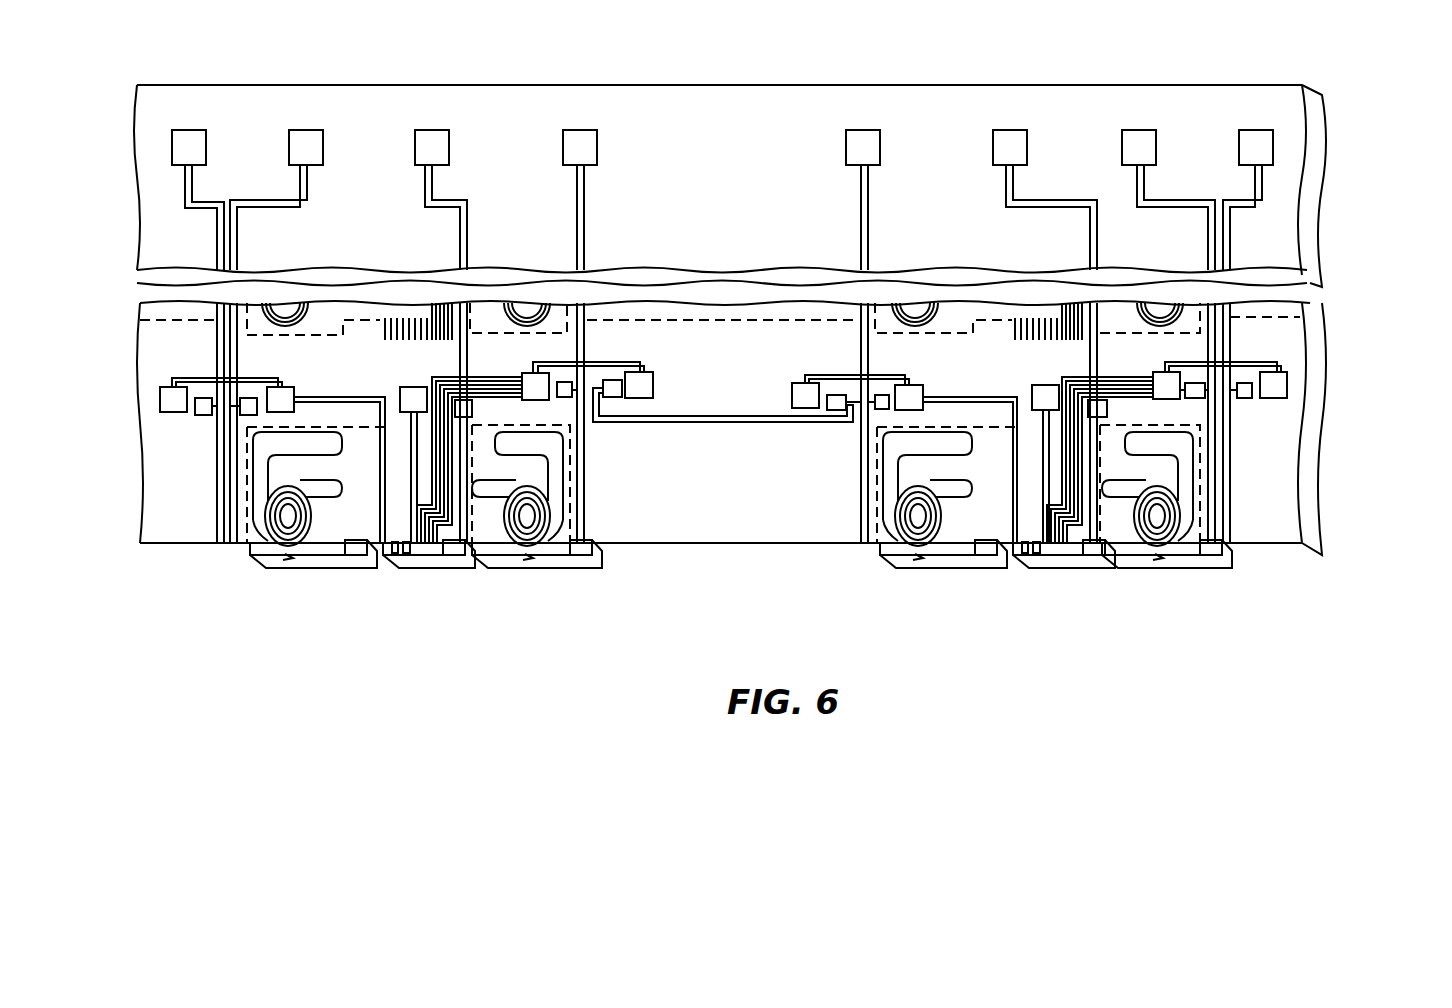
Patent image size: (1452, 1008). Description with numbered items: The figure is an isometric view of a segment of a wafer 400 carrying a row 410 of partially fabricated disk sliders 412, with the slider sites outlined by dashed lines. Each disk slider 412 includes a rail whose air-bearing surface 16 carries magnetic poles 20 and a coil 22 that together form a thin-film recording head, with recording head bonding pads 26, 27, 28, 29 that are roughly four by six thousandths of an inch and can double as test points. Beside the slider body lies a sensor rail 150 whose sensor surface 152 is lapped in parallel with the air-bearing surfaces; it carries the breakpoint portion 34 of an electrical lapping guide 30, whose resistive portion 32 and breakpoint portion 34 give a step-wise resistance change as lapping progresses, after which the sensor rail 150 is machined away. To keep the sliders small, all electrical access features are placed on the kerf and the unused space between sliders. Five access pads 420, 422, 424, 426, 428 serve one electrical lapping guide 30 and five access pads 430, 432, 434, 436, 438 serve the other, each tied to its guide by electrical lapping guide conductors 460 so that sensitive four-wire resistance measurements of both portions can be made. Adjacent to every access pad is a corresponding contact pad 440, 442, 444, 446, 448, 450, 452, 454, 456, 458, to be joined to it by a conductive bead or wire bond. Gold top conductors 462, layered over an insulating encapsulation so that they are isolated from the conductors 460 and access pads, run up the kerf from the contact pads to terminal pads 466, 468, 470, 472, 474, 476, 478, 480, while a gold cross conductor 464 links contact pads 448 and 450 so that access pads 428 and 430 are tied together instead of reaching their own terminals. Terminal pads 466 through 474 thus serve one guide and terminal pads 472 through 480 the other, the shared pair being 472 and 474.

The wafer 400 is at (666, 61).
The row 410 is at (1380, 352).
The disk slider 412 is at (363, 429).
The air-bearing surface 16 is at (335, 568).
The magnetic poles 20 is at (290, 568).
The coil 22 is at (312, 528).
The recording head bonding pad 26 is at (330, 453).
The recording head bonding pad 27 is at (530, 462).
The recording head bonding pad 28 is at (328, 480).
The recording head bonding pad 29 is at (545, 490).
The electrical lapping guide 30 is at (443, 618).
The resistive portion 32 is at (409, 584).
The breakpoint portion 34 is at (443, 572).
The sensor rail 150 is at (462, 568).
The sensor surface 152 is at (448, 575).
The access pad 420 is at (172, 387).
The access pad 422 is at (290, 387).
The access pad 424 is at (418, 384).
The access pad 426 is at (585, 425).
The access pad 428 is at (653, 380).
The access pad 430 is at (792, 395).
The access pad 432 is at (920, 388).
The access pad 434 is at (1045, 385).
The access pad 436 is at (1175, 398).
The access pad 438 is at (1287, 385).
The contact pad 440 is at (203, 415).
The contact pad 442 is at (248, 415).
The contact pad 444 is at (470, 410).
The contact pad 446 is at (545, 373).
The contact pad 448 is at (612, 398).
The contact pad 450 is at (838, 377).
The contact pad 452 is at (855, 415).
The contact pad 454 is at (1100, 405).
The contact pad 456 is at (1200, 398).
The contact pad 458 is at (1252, 395).
The electrical lapping guide conductor 460 is at (400, 440).
The top conductor 462 is at (217, 350).
The cross conductor 464 is at (748, 422).
The terminal pad 466 is at (190, 130).
The terminal pad 468 is at (307, 130).
The terminal pad 470 is at (432, 130).
The terminal pad 472 is at (600, 135).
The terminal pad 474 is at (878, 145).
The terminal pad 476 is at (1010, 130).
The terminal pad 478 is at (1138, 130).
The terminal pad 480 is at (1239, 145).